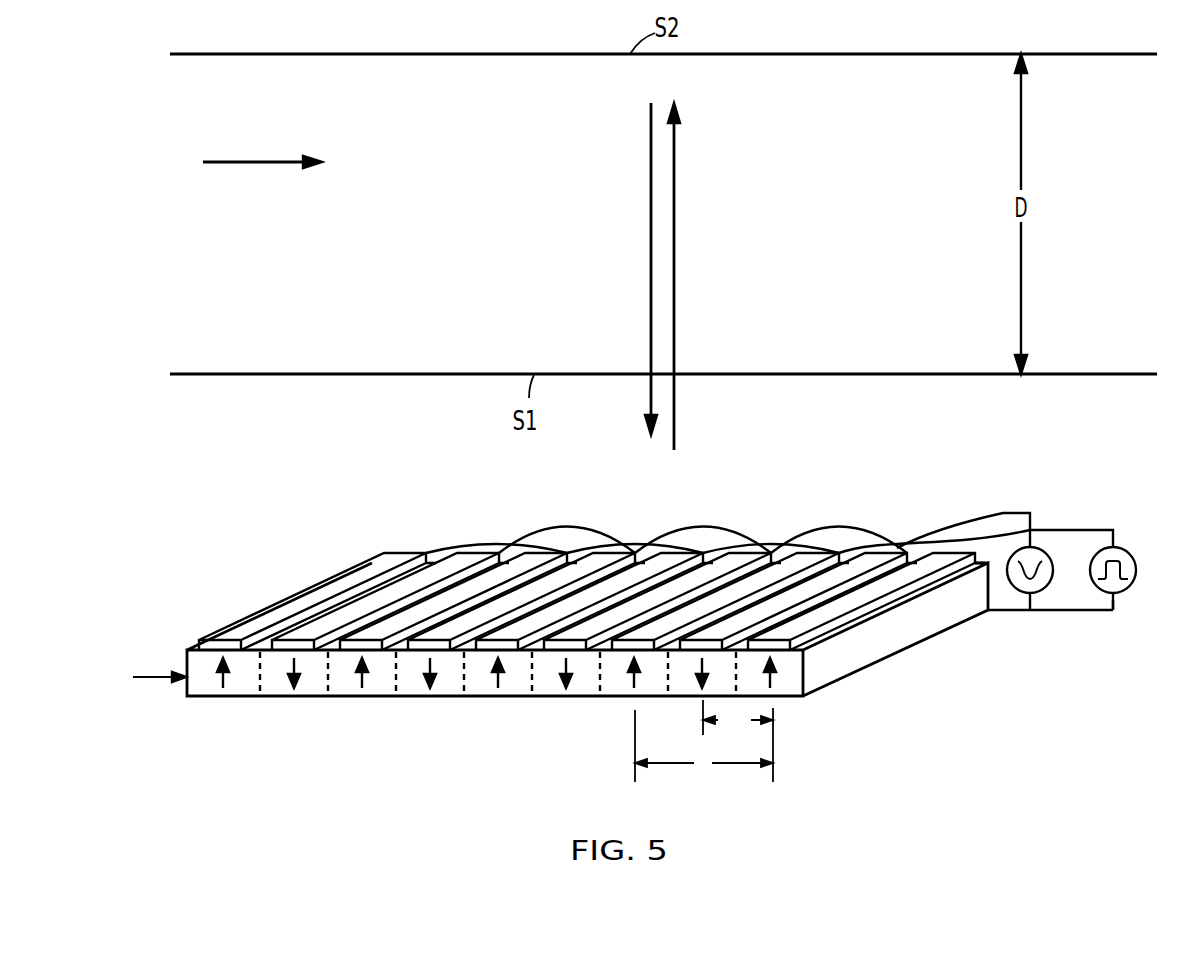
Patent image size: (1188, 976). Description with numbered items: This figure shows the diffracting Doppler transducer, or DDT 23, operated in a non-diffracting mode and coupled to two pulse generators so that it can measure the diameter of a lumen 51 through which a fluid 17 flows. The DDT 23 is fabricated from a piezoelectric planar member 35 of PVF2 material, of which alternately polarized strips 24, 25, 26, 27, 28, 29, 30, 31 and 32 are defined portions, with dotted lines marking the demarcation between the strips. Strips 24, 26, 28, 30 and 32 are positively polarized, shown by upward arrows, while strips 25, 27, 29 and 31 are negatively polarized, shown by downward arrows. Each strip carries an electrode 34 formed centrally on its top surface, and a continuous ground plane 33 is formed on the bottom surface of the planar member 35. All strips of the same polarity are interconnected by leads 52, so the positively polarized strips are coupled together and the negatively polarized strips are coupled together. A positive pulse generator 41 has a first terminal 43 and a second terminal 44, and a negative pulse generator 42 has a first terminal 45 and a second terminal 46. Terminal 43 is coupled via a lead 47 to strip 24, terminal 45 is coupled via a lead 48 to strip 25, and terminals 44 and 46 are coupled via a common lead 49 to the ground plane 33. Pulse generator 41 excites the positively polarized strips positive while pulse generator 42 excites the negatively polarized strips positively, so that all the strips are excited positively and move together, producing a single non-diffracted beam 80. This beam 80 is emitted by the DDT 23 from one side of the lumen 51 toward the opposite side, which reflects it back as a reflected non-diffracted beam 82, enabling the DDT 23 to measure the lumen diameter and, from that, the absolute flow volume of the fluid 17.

The fluid 17 is at (283, 160).
The DDT 23 is at (264, 523).
The positively polarized strip 24 is at (792, 688).
The negatively polarized strip 25 is at (680, 688).
The positively polarized strip 26 is at (613, 690).
The negatively polarized strip 27 is at (580, 688).
The positively polarized strip 28 is at (515, 688).
The negatively polarized strip 29 is at (442, 688).
The positively polarized strip 30 is at (353, 690).
The negatively polarized strip 31 is at (308, 690).
The positively polarized strip 32 is at (211, 690).
The ground plane 33 is at (253, 699).
The electrode 34 is at (635, 540).
The piezoelectric planar member 35 is at (143, 678).
The positive pulse generator 41 is at (1113, 597).
The negative pulse generator 42 is at (1048, 583).
The first terminal 43 is at (1113, 542).
The second terminal 44 is at (1115, 610).
The first terminal 45 is at (1032, 547).
The second terminal 46 is at (1028, 595).
The lead 47 is at (995, 538).
The lead 48 is at (942, 532).
The common lead 49 is at (997, 612).
The lumen 51 is at (440, 53).
The leads 52 is at (863, 543).
The non-diffracted beam 80 is at (674, 178).
The reflected non-diffracted beam 82 is at (651, 178).